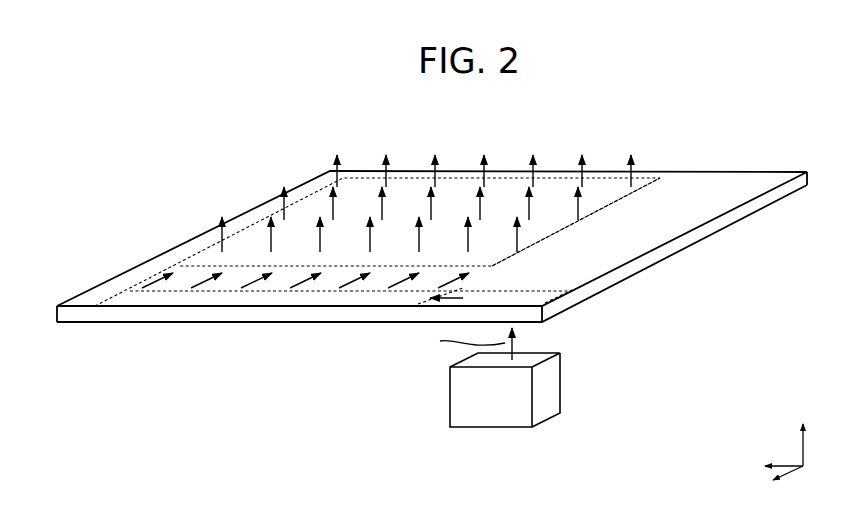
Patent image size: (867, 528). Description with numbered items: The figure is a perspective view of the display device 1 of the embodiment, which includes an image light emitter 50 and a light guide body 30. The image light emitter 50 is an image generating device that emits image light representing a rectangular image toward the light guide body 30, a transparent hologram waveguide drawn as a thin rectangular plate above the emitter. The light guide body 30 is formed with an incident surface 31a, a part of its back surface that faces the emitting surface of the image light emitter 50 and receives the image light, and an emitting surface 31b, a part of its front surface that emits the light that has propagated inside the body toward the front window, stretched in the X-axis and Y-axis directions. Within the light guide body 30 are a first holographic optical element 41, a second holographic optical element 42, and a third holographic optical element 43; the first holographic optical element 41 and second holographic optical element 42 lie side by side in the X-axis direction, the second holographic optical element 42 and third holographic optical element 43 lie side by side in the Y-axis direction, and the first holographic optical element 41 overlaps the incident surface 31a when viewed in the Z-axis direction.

The display device 1 is at (623, 443).
The light guide body 30 is at (737, 223).
The incident surface 31a is at (542, 323).
The emitting surface 31b is at (212, 254).
The first holographic optical element 41 is at (580, 300).
The second holographic optical element 42 is at (102, 303).
The third holographic optical element 43 is at (525, 250).
The image light emitter 50 is at (553, 385).